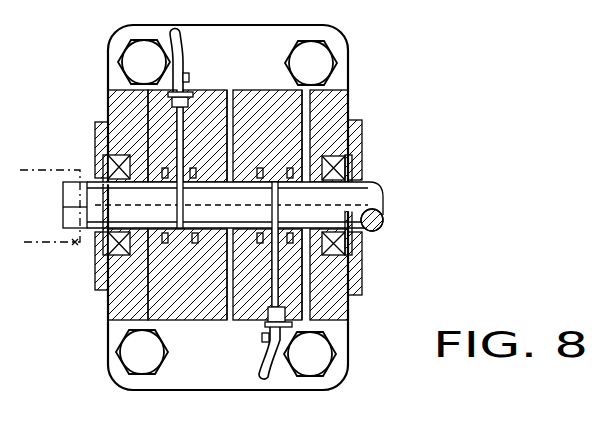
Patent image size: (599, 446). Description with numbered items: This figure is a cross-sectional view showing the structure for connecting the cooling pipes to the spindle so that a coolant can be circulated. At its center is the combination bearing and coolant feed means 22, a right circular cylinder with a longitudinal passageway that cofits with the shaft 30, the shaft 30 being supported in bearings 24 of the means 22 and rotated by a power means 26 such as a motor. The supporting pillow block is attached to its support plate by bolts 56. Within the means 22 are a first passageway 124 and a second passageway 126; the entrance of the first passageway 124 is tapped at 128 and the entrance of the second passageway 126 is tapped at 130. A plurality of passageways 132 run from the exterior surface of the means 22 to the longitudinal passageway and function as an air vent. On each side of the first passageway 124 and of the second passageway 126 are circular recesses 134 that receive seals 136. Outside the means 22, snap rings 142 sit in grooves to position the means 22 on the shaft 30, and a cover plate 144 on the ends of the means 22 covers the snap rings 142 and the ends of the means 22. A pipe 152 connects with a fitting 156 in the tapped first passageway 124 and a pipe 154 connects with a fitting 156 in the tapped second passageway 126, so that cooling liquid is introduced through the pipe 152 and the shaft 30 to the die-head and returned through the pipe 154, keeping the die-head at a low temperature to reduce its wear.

The combination bearing and coolant feed means 22 is at (366, 162).
The bearings 24 is at (103, 175).
The power means 26 is at (75, 246).
The shaft 30 is at (384, 218).
The bolts 56 is at (132, 60).
The first passageway 124 is at (183, 136).
The second passageway 126 is at (275, 289).
The tapped entrance 128 is at (193, 94).
The tapped entrance 130 is at (266, 322).
The passageways 132 is at (300, 90).
The circular recesses 134 is at (290, 168).
The seals 136 is at (166, 168).
The snap rings 142 is at (101, 150).
The cover plate 144 is at (96, 125).
The pipe 152 is at (185, 46).
The pipe 154 is at (277, 382).
The fitting 156 is at (189, 80).